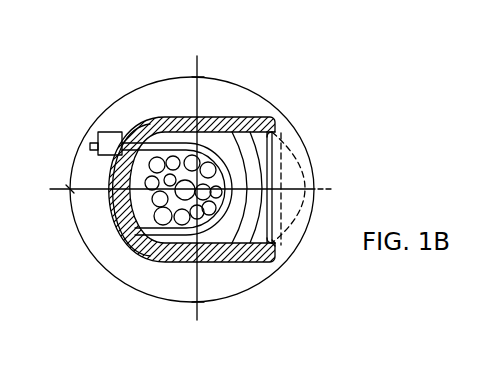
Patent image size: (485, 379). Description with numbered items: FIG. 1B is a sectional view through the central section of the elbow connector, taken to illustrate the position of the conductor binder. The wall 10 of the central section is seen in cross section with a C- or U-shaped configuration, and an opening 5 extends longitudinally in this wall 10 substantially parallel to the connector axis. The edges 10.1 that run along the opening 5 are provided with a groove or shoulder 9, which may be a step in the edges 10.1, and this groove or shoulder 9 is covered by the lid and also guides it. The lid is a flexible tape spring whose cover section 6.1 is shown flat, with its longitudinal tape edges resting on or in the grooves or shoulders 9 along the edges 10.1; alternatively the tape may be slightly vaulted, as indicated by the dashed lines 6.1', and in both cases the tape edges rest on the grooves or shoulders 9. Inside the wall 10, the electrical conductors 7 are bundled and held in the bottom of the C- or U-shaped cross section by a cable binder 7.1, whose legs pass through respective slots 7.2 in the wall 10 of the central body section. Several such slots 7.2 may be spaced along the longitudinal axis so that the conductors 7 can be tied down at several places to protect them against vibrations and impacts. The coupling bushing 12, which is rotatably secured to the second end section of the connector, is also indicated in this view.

The opening 5 is at (282, 214).
The cover section 6.1 is at (256, 184).
The slightly vaulted cover section 6.1' is at (331, 187).
The electrical conductors 7 is at (278, 250).
The cable binder 7.1 is at (270, 172).
The slots 7.2 is at (143, 119).
The groove or shoulder 9 is at (274, 136).
The wall 10 is at (228, 117).
The edges 10.1 is at (262, 116).
The coupling bushing 12 is at (90, 147).